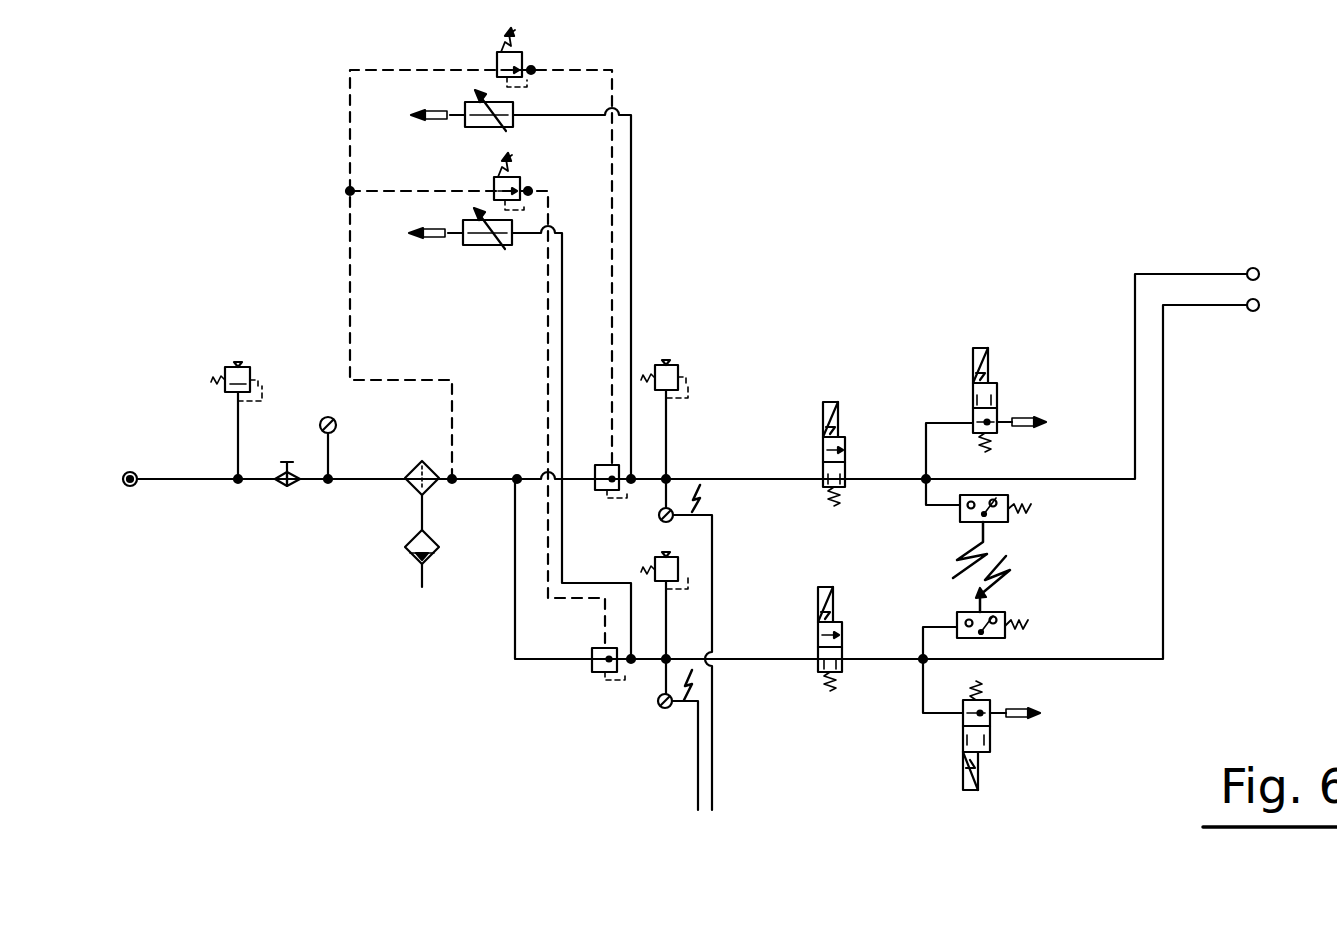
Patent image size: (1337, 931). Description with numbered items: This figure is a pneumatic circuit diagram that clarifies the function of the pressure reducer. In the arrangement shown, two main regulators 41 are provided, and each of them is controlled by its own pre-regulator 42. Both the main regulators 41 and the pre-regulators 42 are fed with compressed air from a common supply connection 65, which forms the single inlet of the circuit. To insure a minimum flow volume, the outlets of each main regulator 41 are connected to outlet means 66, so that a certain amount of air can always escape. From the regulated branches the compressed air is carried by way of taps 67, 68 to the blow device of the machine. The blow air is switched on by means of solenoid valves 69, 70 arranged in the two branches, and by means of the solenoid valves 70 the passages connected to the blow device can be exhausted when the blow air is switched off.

The main regulator 41 is at (601, 492).
The pre-regulator 42 is at (525, 52).
The supply connection 65 is at (125, 470).
The outlet means 66 is at (484, 128).
The tap 67 is at (1248, 268).
The tap 68 is at (1248, 311).
The solenoid valve 69 is at (846, 437).
The solenoid valve 70 is at (997, 394).